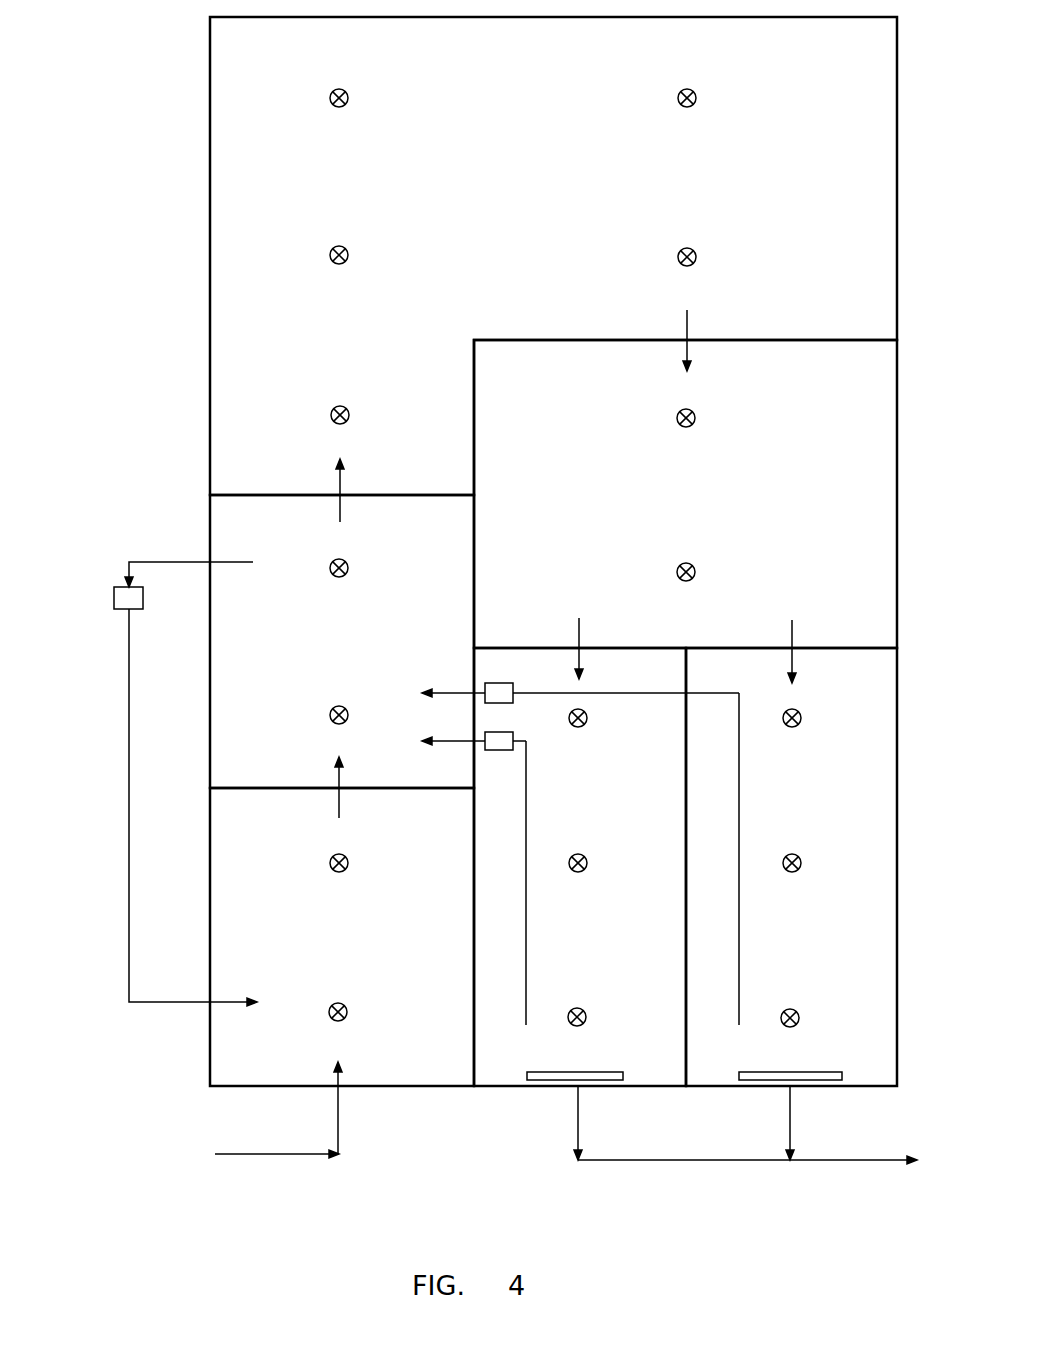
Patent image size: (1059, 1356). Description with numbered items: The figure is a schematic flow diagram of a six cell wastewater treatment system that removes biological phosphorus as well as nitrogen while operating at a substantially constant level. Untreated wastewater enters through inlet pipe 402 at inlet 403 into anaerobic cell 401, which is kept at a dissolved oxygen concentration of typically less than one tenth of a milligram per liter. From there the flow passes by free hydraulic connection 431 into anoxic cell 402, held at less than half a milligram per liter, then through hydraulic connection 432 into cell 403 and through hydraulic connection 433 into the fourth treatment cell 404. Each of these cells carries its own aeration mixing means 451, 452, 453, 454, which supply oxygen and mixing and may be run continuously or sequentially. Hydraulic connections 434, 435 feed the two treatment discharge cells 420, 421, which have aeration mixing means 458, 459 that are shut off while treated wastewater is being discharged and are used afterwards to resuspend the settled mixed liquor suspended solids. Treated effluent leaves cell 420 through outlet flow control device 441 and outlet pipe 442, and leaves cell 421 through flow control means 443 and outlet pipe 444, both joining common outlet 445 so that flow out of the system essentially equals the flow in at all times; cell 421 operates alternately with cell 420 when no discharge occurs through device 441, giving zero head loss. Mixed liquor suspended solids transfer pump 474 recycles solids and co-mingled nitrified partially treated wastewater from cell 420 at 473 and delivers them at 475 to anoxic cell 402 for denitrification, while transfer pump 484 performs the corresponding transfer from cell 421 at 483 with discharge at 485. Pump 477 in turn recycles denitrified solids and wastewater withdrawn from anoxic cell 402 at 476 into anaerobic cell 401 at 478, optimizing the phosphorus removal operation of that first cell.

The anaerobic cell 401 is at (262, 1078).
The anoxic cell 402 is at (273, 782).
The inlet 403 is at (277, 488).
The fourth treatment cell 404 is at (542, 636).
The treatment discharge cell 420 is at (672, 1066).
The second treatment discharge cell 421 is at (875, 1066).
The hydraulic connection 431 is at (342, 790).
The hydraulic connection 432 is at (343, 498).
The hydraulic connection 433 is at (690, 343).
The hydraulic connection 434 is at (583, 650).
The hydraulic connection 435 is at (797, 653).
The outlet flow control device 441 is at (622, 1088).
The outlet pipe 442 is at (580, 1128).
The flow control means 443 is at (832, 1088).
The outlet pipe 444 is at (795, 1130).
The outlet 445 is at (850, 1162).
The aeration mixing means 451 is at (365, 961).
The aeration mixing means 452 is at (366, 665).
The aeration mixing means 453 is at (540, 280).
The aeration mixing means 454 is at (713, 518).
The aeration mixing means 458 is at (604, 867).
The aeration mixing means 459 is at (818, 868).
The solids transfer point 473 is at (526, 1025).
The mixed liquor suspended solids transfer pump 474 is at (497, 732).
The solids transfer discharge 475 is at (474, 745).
The recycle withdrawal point 476 is at (253, 562).
The pump 477 is at (114, 600).
The recycle discharge point 478 is at (207, 1003).
The solids transfer point 483 is at (739, 1025).
The transfer pump 484 is at (497, 683).
The solids transfer discharge 485 is at (474, 690).